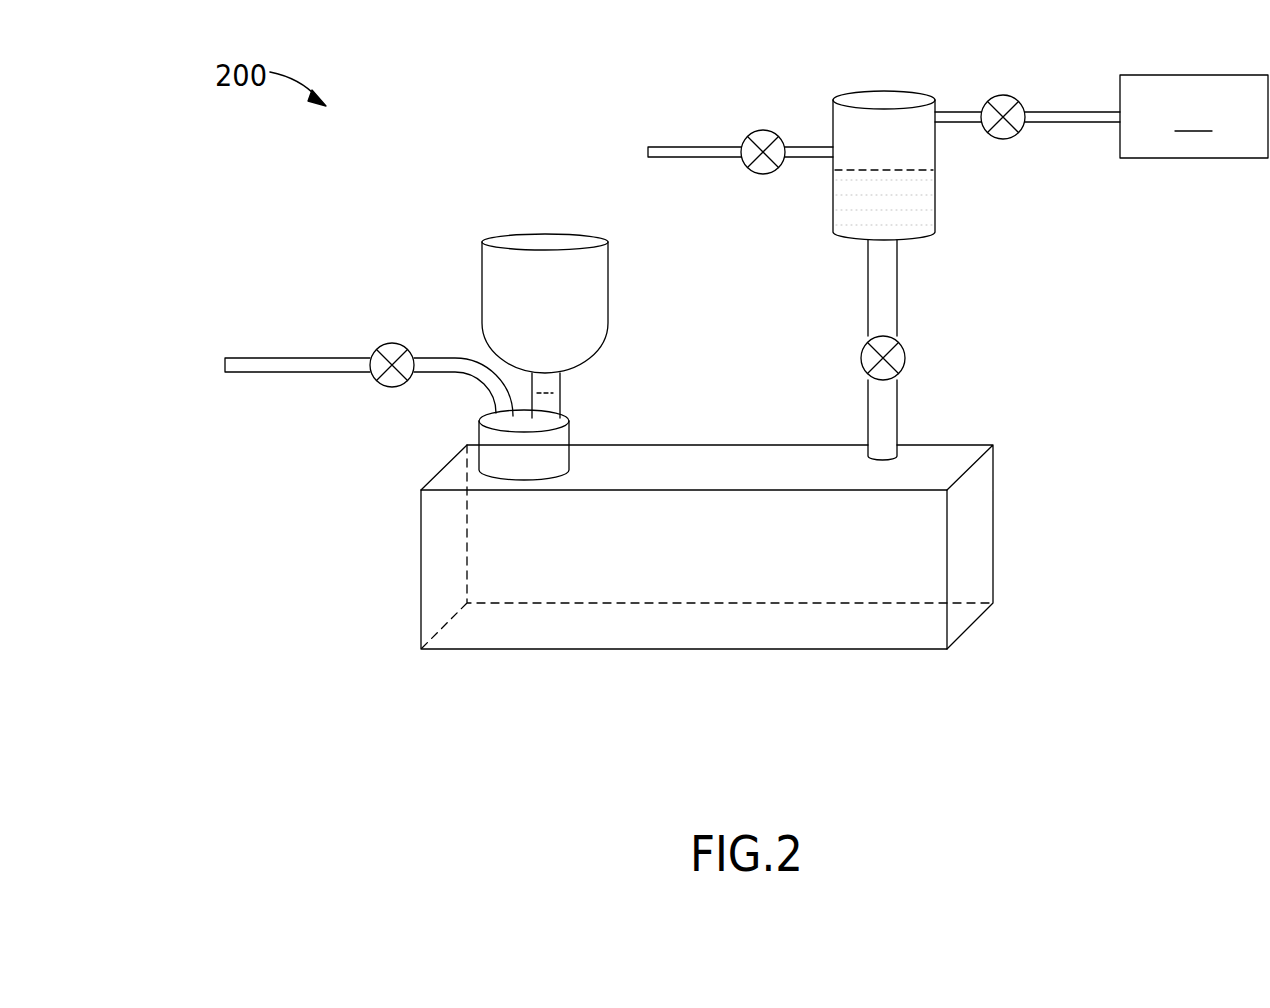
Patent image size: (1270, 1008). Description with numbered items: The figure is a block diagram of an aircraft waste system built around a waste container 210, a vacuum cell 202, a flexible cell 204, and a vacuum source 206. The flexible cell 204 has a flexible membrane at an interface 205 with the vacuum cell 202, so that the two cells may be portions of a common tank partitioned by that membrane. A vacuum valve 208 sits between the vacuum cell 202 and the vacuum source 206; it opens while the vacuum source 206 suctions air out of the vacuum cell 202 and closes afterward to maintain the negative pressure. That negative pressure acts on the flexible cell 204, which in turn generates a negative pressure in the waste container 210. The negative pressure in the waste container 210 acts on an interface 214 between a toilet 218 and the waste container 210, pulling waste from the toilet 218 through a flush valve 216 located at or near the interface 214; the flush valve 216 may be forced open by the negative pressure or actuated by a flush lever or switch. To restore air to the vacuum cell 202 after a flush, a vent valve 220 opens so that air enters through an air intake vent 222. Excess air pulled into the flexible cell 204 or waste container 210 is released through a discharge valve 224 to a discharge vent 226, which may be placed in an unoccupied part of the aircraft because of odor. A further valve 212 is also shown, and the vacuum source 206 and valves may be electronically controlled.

The vacuum cell 202 is at (888, 100).
The flexible cell 204 is at (845, 207).
The interface 205 is at (905, 175).
The vacuum source 206 is at (1146, 116).
The vacuum valve 208 is at (1003, 95).
The waste container 210 is at (968, 546).
The valve 212 is at (907, 363).
The interface 214 is at (495, 444).
The flush valve 216 is at (547, 397).
The toilet 218 is at (545, 240).
The vent valve 220 is at (763, 130).
The air intake vent 222 is at (648, 152).
The discharge valve 224 is at (392, 343).
The discharge vent 226 is at (225, 364).